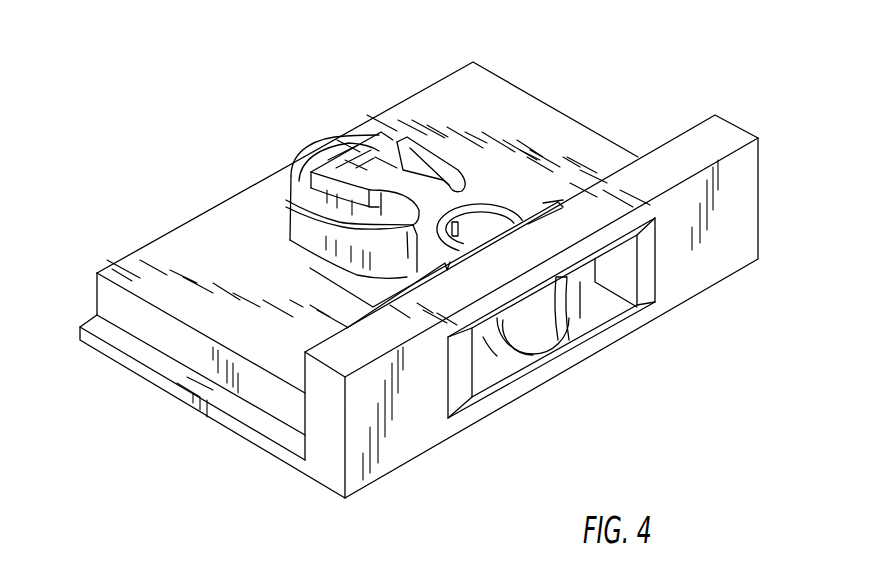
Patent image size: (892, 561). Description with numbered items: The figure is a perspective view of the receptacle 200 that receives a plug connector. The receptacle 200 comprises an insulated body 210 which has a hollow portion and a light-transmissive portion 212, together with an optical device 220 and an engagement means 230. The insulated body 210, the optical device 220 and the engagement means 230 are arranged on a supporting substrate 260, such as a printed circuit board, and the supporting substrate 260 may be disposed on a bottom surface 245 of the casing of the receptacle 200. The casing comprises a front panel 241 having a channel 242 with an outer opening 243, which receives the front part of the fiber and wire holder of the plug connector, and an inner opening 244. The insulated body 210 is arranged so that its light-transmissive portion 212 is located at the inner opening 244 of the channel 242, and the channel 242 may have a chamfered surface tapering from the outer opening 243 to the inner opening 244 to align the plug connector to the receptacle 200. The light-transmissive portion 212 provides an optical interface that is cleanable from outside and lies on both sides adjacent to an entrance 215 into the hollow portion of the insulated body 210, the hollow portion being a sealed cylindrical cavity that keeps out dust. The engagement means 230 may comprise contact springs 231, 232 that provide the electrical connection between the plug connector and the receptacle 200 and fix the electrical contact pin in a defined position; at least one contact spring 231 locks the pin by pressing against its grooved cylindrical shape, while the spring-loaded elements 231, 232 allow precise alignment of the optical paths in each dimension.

The receptacle 200 is at (673, 103).
The insulated body 210 is at (358, 175).
The light-transmissive portion 212 is at (580, 283).
The entrance 215 is at (580, 282).
The optical device 220 is at (543, 203).
The engagement means 230 is at (293, 185).
The contact spring 231 is at (290, 185).
The contact spring 232 is at (313, 233).
The front panel 241 is at (733, 217).
The channel 242 is at (607, 307).
The outer opening 243 is at (480, 382).
The inner opening 244 is at (483, 337).
The bottom surface 245 is at (115, 358).
The supporting substrate 260 is at (147, 292).